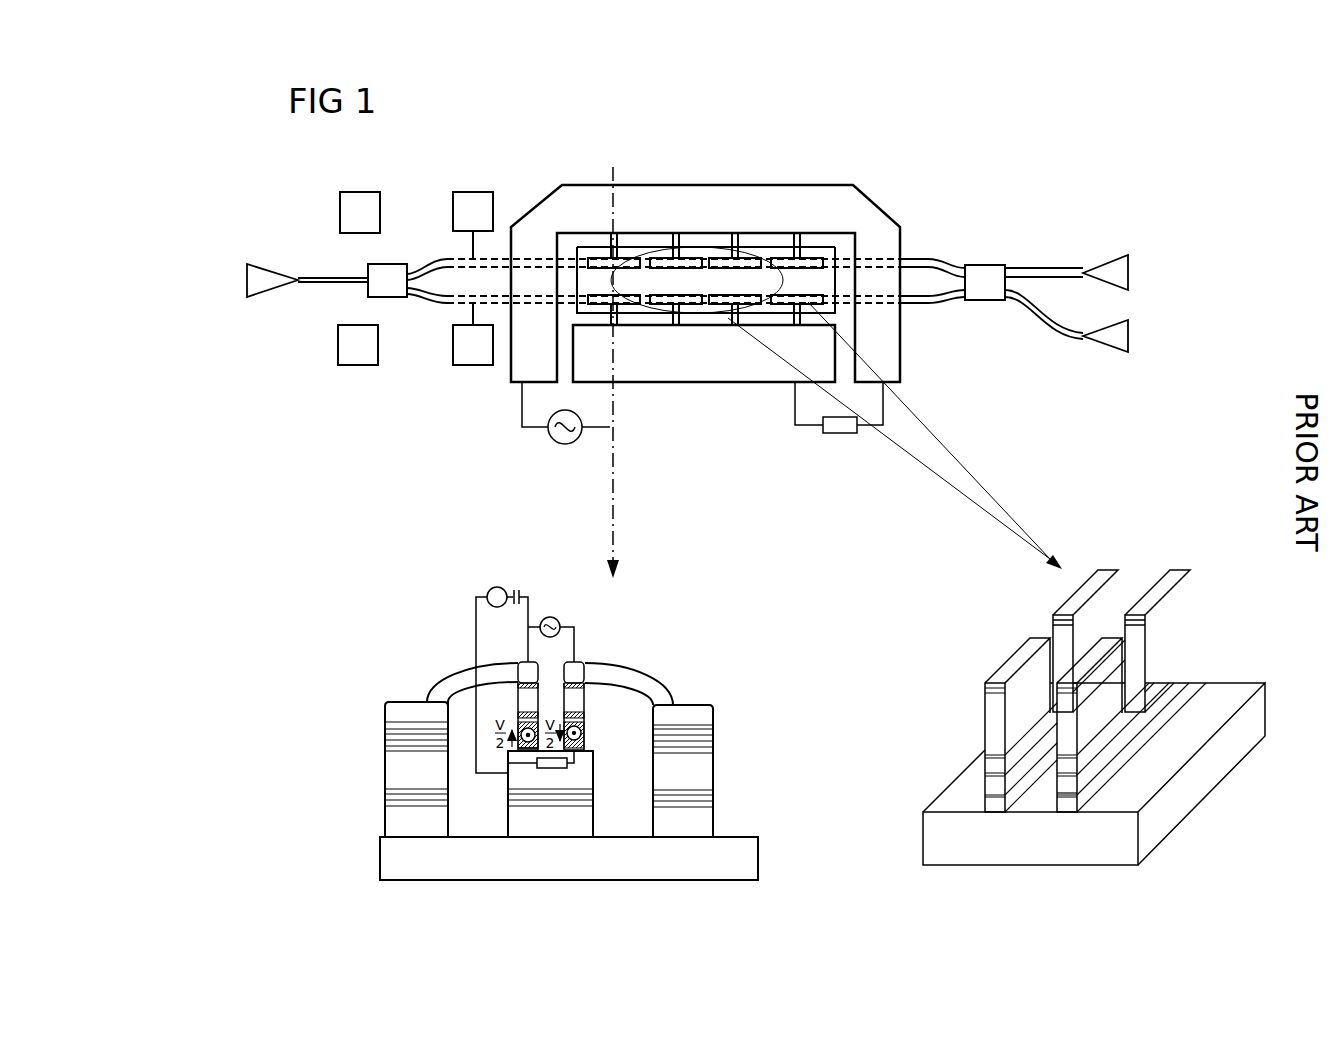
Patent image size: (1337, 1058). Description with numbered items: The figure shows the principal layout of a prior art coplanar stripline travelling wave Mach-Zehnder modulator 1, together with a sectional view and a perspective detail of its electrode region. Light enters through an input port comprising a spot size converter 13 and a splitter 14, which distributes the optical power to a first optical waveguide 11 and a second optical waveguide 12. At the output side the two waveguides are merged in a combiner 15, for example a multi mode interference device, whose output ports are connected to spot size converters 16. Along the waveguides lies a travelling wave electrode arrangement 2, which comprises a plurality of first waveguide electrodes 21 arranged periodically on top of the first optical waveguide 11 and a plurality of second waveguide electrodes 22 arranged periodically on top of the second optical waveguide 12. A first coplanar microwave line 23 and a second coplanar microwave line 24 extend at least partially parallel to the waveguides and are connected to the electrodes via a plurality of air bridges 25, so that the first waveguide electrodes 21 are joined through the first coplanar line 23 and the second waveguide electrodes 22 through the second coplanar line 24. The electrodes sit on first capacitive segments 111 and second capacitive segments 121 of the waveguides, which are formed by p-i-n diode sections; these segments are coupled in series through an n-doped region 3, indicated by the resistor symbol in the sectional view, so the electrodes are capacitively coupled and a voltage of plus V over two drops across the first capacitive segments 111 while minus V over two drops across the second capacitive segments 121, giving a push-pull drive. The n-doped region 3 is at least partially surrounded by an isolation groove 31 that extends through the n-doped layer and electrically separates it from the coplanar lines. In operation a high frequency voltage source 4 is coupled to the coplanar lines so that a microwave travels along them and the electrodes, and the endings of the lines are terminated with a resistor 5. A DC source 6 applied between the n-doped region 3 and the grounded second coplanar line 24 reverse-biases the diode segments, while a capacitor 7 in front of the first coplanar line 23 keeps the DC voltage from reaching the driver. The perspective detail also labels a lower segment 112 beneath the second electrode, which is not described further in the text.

The Mach-Zehnder modulator 1 is at (896, 187).
The travelling wave electrode arrangement 2 is at (631, 168).
The n-doped region 3 is at (825, 238).
The high frequency voltage source 4 is at (565, 436).
The resistor 5 is at (843, 436).
The DC source 6 is at (493, 585).
The capacitor 7 is at (520, 588).
The first optical waveguide 11 is at (915, 258).
The second optical waveguide 12 is at (921, 303).
The spot size converter 13 is at (261, 277).
The splitter 14 is at (390, 269).
The combiner 15 is at (985, 272).
The spot size converters 16 is at (1125, 335).
The first waveguide electrodes 21 is at (780, 236).
The second waveguide electrodes 22 is at (812, 304).
The first coplanar microwave line 23 is at (680, 200).
The second coplanar microwave line 24 is at (682, 370).
The air bridges 25 is at (797, 237).
The isolation groove 31 is at (582, 232).
The first capacitive segments 111 is at (512, 742).
The lower cladding of second waveguide 112 is at (1067, 783).
The second capacitive segments 121 is at (585, 735).